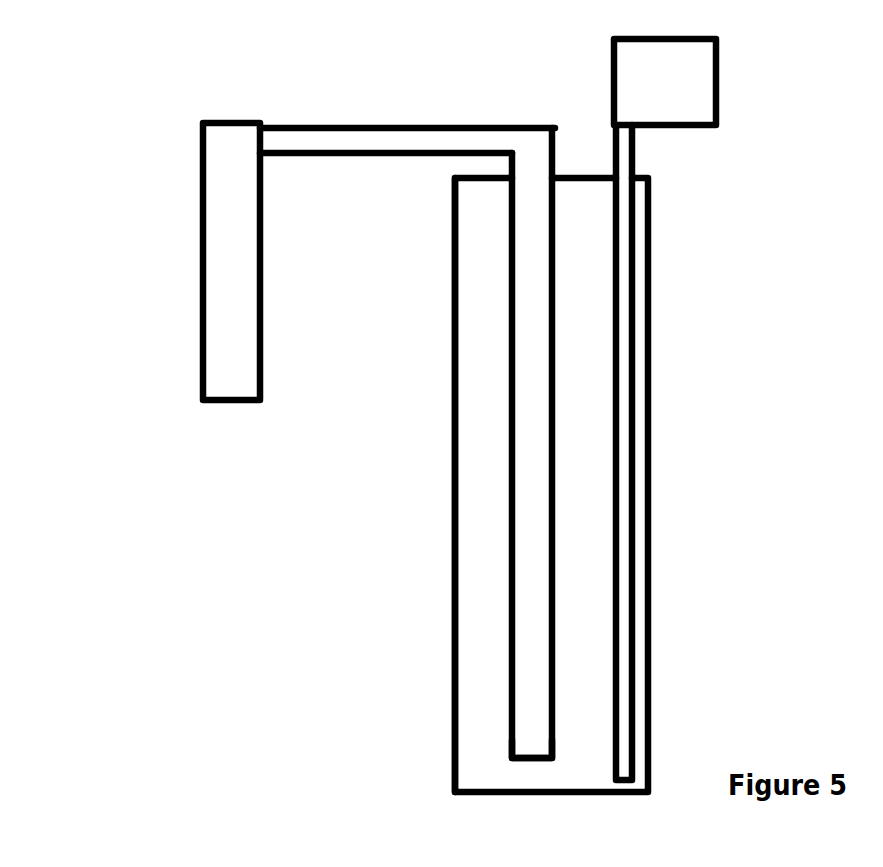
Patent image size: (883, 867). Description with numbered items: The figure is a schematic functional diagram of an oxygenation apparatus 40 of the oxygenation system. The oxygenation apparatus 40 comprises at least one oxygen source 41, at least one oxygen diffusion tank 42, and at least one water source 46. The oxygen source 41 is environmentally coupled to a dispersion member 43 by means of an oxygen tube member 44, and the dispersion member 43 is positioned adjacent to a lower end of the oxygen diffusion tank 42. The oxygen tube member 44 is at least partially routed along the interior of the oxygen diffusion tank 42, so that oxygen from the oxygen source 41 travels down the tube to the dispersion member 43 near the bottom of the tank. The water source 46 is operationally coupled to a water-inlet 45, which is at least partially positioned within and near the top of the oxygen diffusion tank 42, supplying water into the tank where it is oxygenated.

The oxygenation apparatus 40 is at (676, 284).
The oxygen source 41 is at (203, 233).
The oxygen diffusion tank 42 is at (472, 389).
The dispersion member 43 is at (510, 739).
The oxygen tube member 44 is at (520, 412).
The water-inlet 45 is at (632, 772).
The water source 46 is at (665, 82).